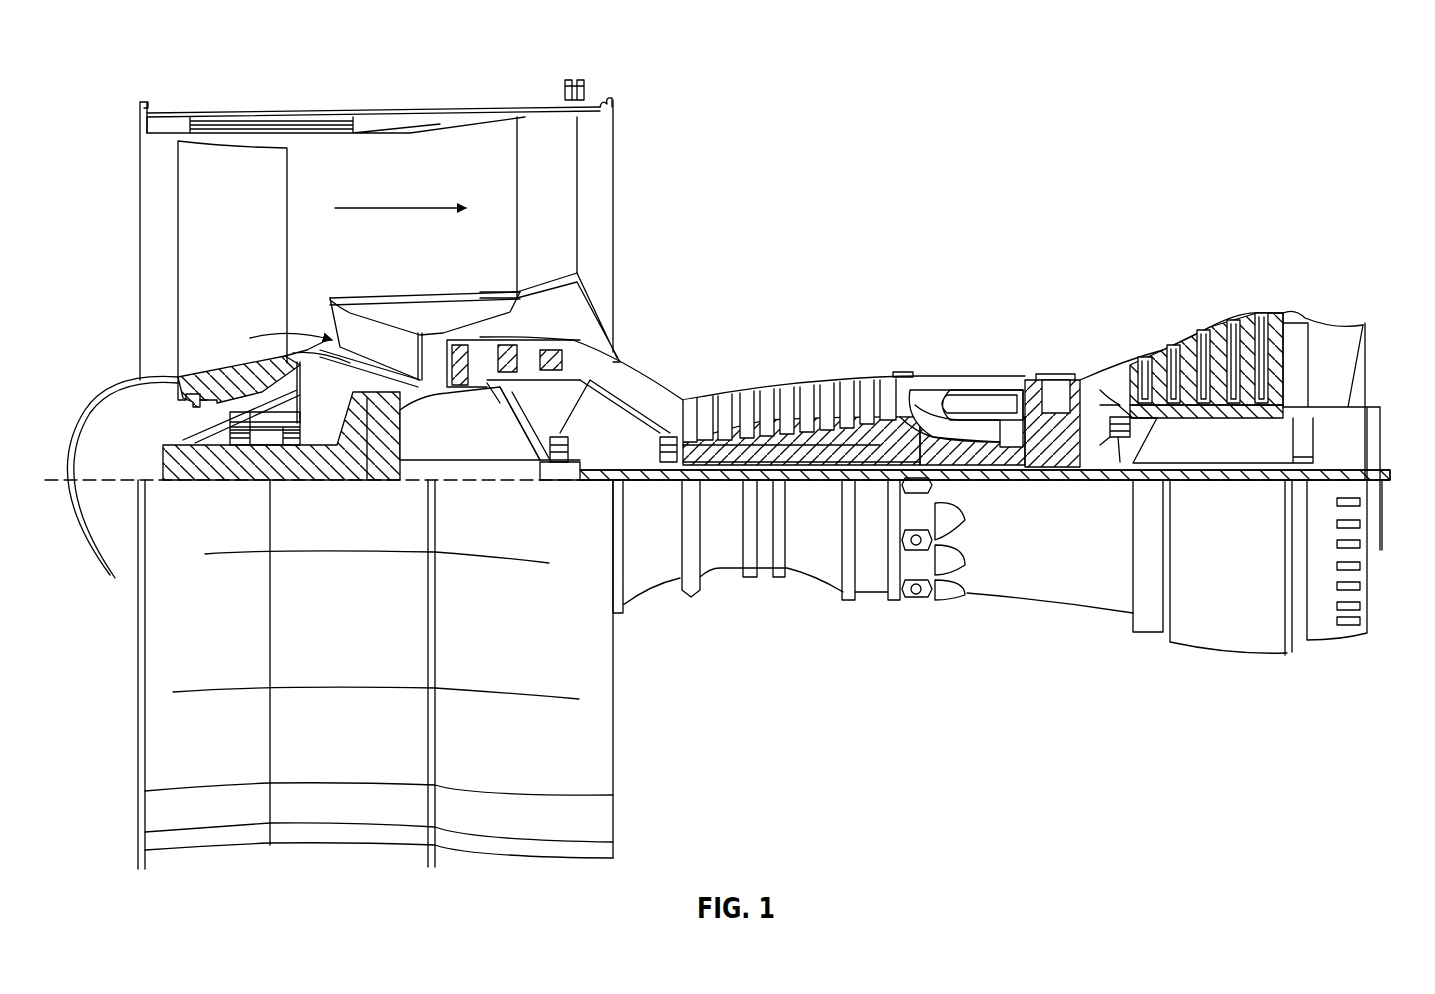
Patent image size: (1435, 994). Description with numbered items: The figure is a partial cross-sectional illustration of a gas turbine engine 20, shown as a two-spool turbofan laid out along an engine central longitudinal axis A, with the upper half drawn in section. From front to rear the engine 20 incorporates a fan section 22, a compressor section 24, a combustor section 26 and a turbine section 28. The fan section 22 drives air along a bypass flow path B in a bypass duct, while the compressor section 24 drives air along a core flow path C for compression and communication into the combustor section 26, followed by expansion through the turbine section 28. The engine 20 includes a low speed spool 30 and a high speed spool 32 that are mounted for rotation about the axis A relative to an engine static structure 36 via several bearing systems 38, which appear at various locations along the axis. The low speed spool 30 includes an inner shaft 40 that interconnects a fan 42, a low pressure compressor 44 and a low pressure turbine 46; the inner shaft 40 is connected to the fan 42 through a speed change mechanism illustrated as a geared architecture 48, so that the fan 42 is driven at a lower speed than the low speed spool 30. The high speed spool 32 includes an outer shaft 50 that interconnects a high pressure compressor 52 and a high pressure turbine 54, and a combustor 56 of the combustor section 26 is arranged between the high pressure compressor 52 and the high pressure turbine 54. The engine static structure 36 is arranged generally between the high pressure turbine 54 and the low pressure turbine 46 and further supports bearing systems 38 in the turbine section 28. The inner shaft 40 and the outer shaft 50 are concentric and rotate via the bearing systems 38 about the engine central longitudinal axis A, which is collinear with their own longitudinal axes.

The gas turbine engine 20 is at (1189, 147).
The fan section 22 is at (237, 101).
The compressor section 24 is at (800, 340).
The combustor section 26 is at (968, 340).
The turbine section 28 is at (1117, 322).
The low speed spool 30 is at (835, 485).
The high speed spool 32 is at (887, 437).
The engine static structure 36 is at (872, 598).
The bearing systems 38 is at (245, 455).
The inner shaft 40 is at (641, 483).
The fan 42 is at (256, 236).
The low pressure compressor 44 is at (531, 357).
The low pressure turbine 46 is at (1218, 347).
The geared architecture 48 is at (375, 470).
The outer shaft 50 is at (998, 470).
The high pressure compressor 52 is at (770, 405).
The high pressure turbine 54 is at (1050, 376).
The combustor 56 is at (977, 397).
The engine central longitudinal axis A is at (1390, 477).
The bypass flow path B is at (404, 208).
The core flow path C is at (250, 337).